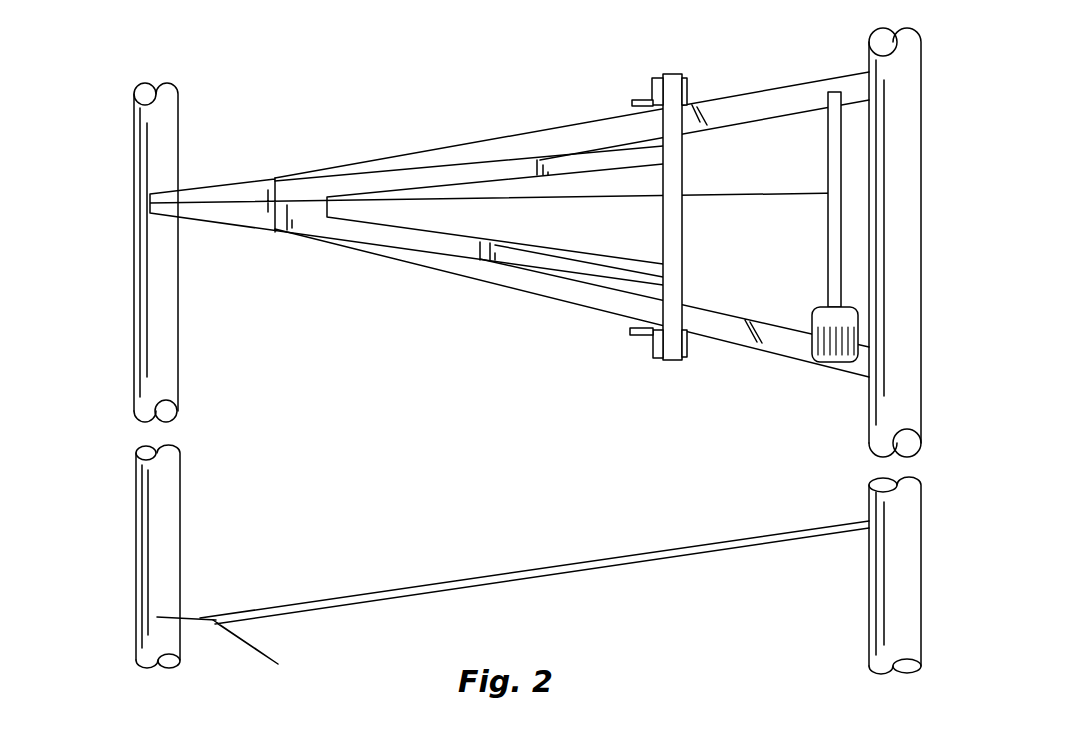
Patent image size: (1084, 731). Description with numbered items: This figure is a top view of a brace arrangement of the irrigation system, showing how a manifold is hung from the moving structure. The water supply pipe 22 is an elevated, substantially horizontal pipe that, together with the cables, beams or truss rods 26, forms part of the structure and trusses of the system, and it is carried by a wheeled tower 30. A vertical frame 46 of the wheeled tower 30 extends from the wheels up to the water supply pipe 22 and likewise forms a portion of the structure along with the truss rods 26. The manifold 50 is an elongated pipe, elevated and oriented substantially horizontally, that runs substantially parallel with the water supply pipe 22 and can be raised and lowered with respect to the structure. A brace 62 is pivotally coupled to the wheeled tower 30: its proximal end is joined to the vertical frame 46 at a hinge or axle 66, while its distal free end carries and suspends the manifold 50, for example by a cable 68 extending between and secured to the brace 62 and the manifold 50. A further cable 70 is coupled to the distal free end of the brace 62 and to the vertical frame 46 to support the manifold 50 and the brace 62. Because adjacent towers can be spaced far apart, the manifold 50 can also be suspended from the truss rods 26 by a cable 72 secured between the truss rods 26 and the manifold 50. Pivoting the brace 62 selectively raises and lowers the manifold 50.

The water supply pipe 22 is at (905, 73).
The truss rods 26 is at (587, 571).
The wheeled tower 30 is at (742, 105).
The vertical frame 46 is at (716, 327).
The manifold 50 is at (163, 124).
The brace 62 is at (317, 188).
The hinge or axle 66 is at (676, 238).
The cable 68 is at (150, 205).
The cable 70 is at (440, 203).
The cable 72 is at (190, 617).